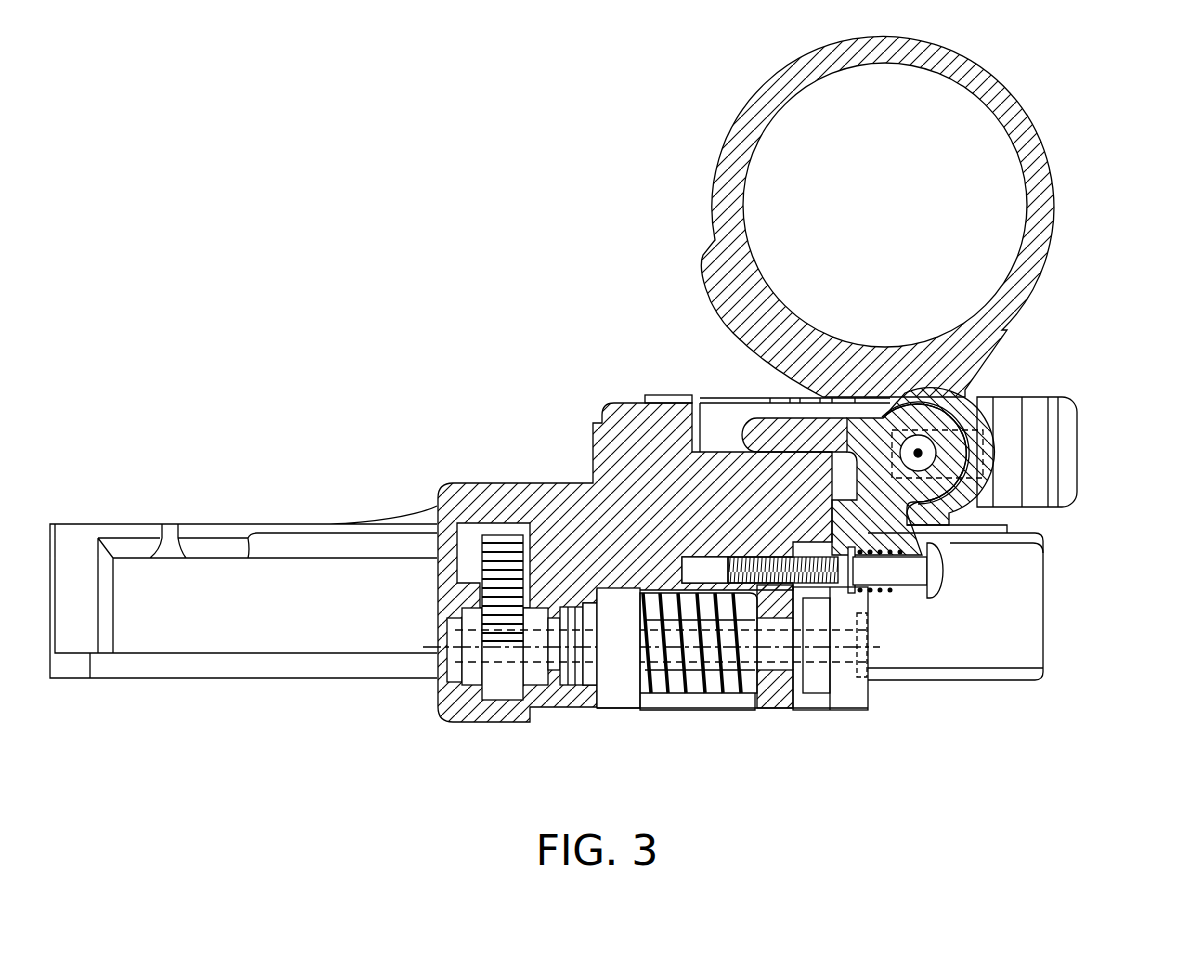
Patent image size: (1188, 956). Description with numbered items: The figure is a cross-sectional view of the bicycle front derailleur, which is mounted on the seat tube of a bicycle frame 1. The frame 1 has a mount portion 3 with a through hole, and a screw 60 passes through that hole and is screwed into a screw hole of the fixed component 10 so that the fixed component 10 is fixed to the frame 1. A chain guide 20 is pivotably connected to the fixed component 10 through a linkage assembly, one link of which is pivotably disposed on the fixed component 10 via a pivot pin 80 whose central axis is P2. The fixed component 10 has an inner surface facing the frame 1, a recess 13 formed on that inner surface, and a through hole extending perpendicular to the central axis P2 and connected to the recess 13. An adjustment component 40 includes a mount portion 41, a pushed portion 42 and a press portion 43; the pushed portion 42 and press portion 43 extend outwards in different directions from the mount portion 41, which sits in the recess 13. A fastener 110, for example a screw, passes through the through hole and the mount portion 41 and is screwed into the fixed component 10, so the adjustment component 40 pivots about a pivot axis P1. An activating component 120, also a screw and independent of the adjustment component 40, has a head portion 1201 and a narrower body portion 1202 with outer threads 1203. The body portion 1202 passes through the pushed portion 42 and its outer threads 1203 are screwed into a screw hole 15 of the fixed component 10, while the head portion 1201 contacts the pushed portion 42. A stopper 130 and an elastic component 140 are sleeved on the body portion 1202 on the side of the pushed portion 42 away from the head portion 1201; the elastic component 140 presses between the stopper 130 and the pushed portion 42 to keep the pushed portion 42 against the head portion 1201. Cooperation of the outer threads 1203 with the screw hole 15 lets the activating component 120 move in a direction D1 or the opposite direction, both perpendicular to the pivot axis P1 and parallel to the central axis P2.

The bicycle frame 1 is at (1050, 190).
The mount portion 3 is at (988, 468).
The fixed component 10 is at (625, 413).
The recess 13 is at (720, 420).
The screw hole 15 is at (696, 568).
The chain guide 20 is at (222, 515).
The adjustment component 40 is at (860, 412).
The mount portion 41 is at (950, 492).
The pushed portion 42 is at (1010, 541).
The press portion 43 is at (773, 432).
The screw 60 is at (1075, 452).
The pivot pin 80 is at (623, 660).
The fastener 110 is at (978, 443).
The activating component 120 is at (950, 573).
The stopper 130 is at (852, 600).
The elastic component 140 is at (902, 590).
The head portion 1201 is at (935, 586).
The body portion 1202 is at (893, 577).
The outer threads 1203 is at (775, 613).
The pivot axis P1 is at (924, 455).
The central axis P2 is at (673, 693).
The direction D1 is at (855, 780).